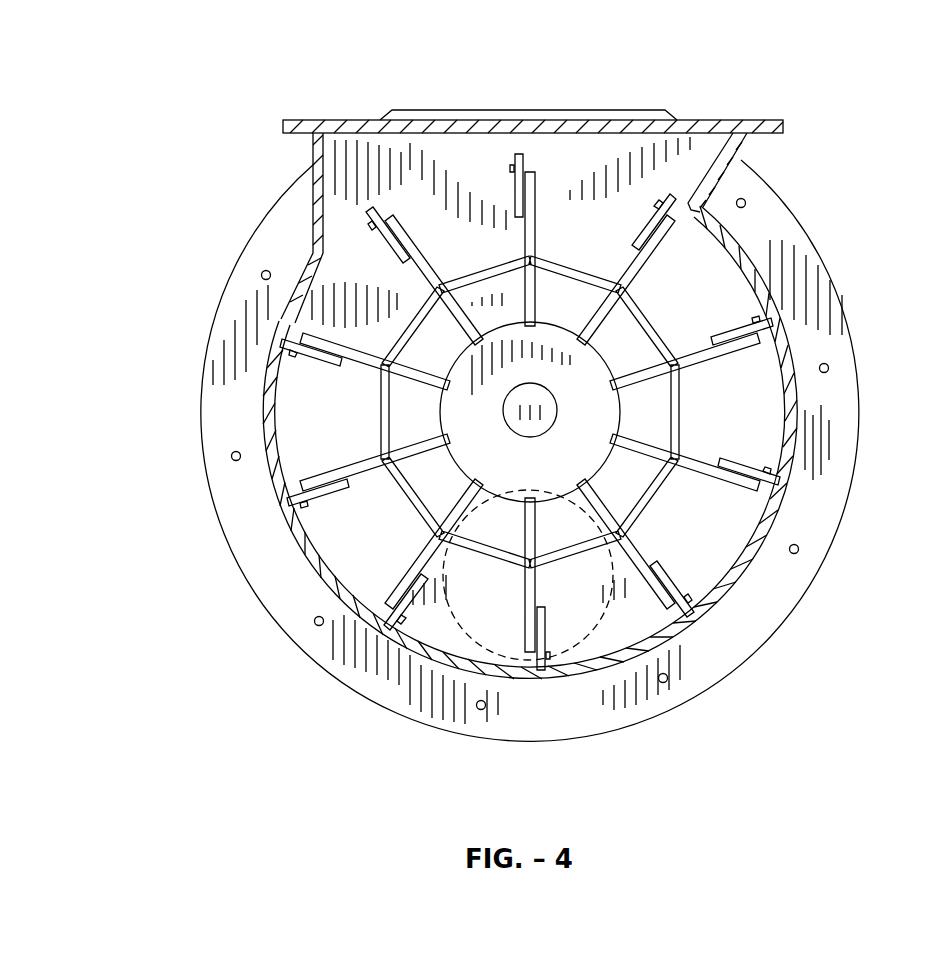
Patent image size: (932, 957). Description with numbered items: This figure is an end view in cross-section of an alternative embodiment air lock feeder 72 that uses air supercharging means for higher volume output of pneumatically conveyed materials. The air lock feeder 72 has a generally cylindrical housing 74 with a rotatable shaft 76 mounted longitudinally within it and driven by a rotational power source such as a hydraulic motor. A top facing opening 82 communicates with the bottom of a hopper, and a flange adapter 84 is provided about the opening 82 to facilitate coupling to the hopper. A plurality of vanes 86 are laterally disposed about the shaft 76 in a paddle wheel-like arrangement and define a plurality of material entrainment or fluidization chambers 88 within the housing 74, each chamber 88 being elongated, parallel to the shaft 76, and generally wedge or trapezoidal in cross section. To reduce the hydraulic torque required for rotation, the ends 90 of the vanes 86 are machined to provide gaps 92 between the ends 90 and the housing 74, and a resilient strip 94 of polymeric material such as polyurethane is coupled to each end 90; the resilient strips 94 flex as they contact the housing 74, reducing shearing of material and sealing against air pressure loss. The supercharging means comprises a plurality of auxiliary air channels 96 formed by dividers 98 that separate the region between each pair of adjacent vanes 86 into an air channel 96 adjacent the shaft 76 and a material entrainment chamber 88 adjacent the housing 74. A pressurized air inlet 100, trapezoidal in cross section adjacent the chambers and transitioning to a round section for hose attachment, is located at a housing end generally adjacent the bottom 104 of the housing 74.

The air lock feeder 72 is at (158, 66).
The cylindrical housing 74 is at (838, 393).
The rotatable shaft 76 is at (517, 425).
The top facing opening 82 is at (504, 96).
The flange adapter 84 is at (300, 125).
The vane 86 is at (327, 473).
The material entrainment chamber 88 is at (307, 402).
The vane end 90 is at (298, 322).
The gap 92 is at (303, 338).
The resilient strip 94 is at (293, 344).
The supercharger air channel 96 is at (415, 430).
The divider 98 is at (383, 425).
The pressurized air inlet 100 is at (462, 635).
The bottom of housing 104 is at (495, 772).